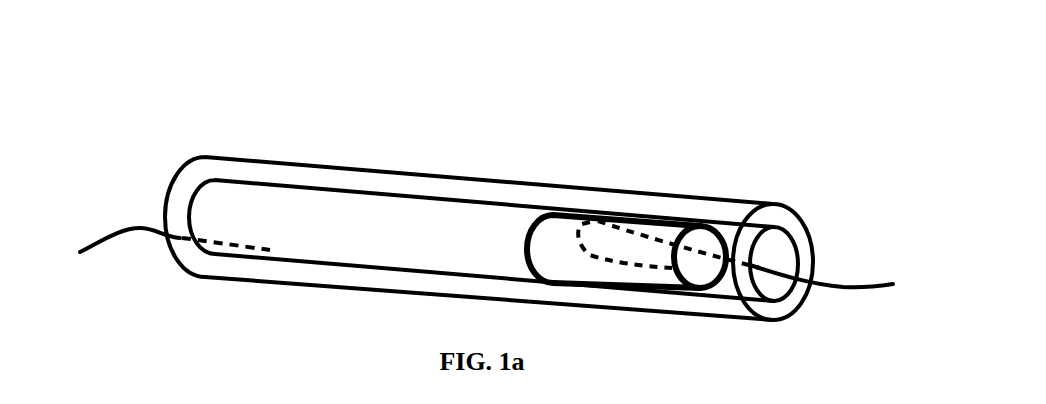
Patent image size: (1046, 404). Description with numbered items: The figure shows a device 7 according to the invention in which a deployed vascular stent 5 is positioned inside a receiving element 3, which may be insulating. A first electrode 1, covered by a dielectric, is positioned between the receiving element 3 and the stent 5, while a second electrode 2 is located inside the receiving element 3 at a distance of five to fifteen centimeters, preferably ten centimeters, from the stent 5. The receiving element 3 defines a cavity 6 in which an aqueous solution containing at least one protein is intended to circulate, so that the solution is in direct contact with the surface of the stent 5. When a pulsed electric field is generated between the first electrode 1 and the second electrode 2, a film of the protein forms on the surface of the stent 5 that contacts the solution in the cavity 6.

The first electrode 1 is at (843, 282).
The second electrode 2 is at (118, 232).
The receiving element 3 is at (270, 179).
The stent 5 is at (543, 213).
The cavity 6 is at (770, 259).
The device 7 is at (370, 220).